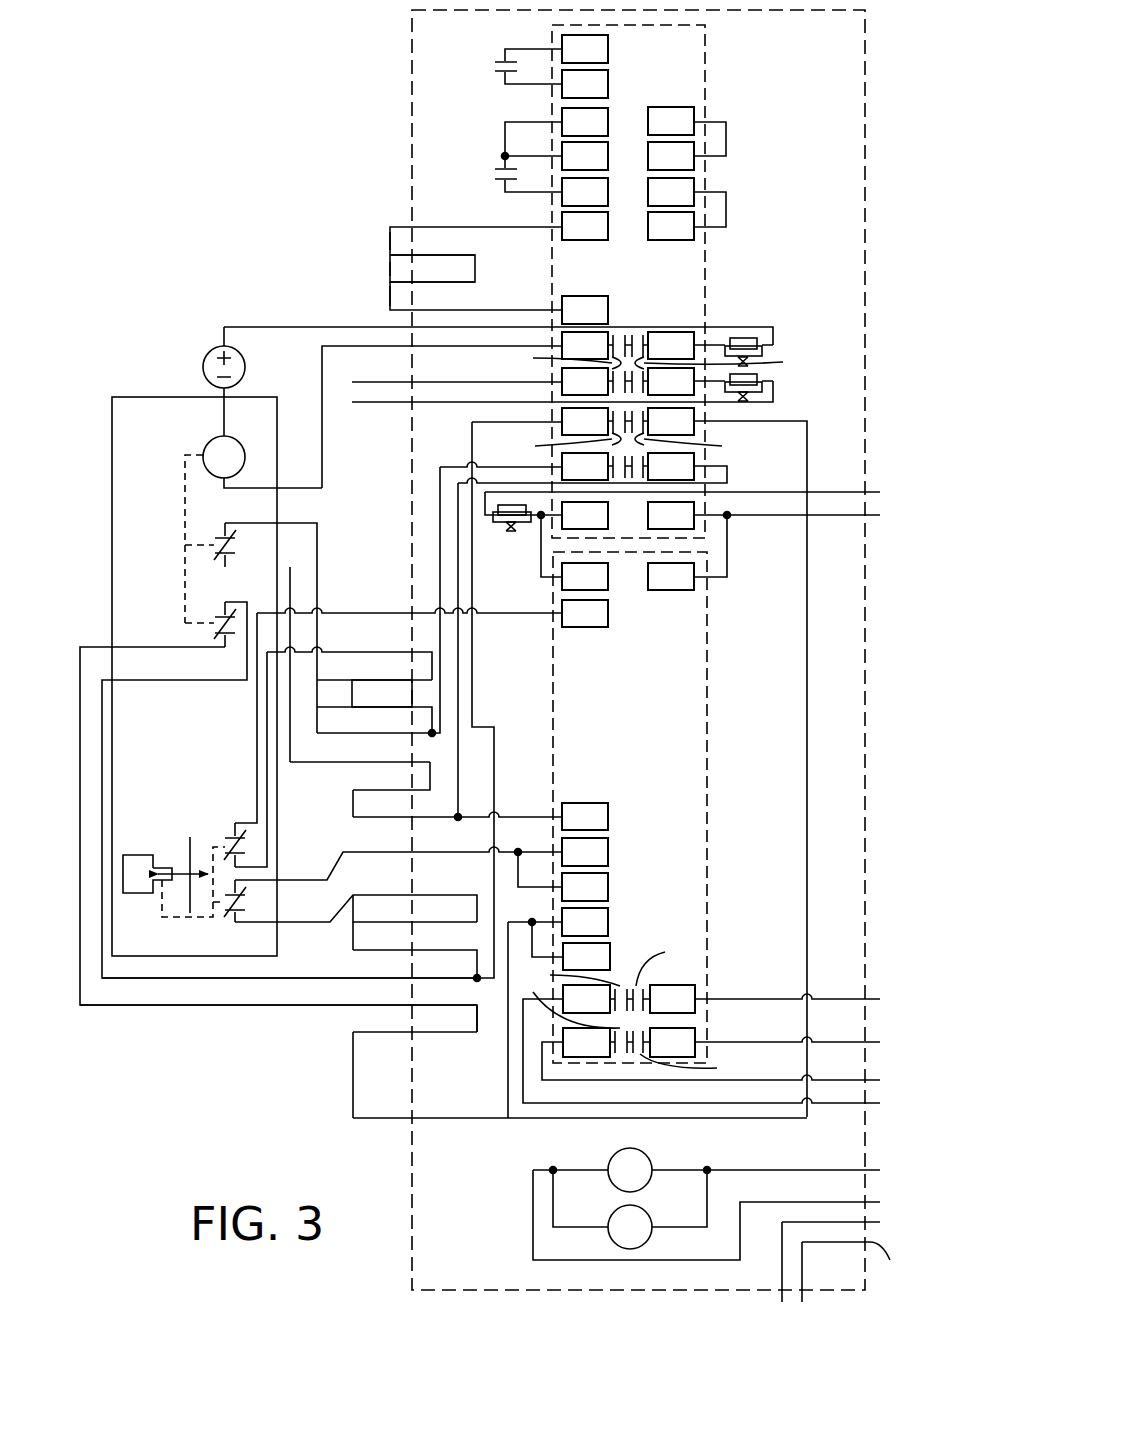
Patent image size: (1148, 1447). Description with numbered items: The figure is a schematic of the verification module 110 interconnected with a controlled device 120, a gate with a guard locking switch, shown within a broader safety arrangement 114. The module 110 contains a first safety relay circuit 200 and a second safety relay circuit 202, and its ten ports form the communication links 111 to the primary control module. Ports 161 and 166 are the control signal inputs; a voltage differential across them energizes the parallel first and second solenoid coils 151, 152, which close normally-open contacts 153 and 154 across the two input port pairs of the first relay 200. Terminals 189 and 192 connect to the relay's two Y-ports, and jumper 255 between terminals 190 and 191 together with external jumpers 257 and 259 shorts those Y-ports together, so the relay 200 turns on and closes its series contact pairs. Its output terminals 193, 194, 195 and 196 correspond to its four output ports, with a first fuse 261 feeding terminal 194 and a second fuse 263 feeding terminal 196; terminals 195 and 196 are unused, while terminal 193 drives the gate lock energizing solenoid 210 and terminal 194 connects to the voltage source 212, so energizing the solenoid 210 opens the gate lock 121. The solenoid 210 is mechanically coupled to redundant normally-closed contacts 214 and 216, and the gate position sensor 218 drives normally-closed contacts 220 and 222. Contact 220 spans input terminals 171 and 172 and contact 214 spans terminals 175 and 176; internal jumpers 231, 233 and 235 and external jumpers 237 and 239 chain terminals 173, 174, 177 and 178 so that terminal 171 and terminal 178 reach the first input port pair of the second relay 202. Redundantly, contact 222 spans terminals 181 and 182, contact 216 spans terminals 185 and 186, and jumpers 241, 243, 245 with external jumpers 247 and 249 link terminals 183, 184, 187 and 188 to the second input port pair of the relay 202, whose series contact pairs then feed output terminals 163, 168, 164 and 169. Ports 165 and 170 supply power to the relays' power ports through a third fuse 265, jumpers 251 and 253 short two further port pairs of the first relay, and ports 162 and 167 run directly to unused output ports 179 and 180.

The verification module 110 is at (800, 59).
The first safety relay circuit 200 is at (668, 77).
The second safety relay circuit 202 is at (648, 781).
The second normally-open contact 154 is at (488, 65).
The first normally-open contact 153 is at (488, 172).
The terminal 189 is at (392, 226).
The terminal 190 is at (400, 254).
The external jumper 257 is at (390, 240).
The jumper 255 is at (476, 270).
The terminal 191 is at (392, 278).
The external jumper 259 is at (390, 300).
The terminal 192 is at (399, 309).
The second output terminal 194 is at (392, 327).
The controlled device 120 is at (160, 330).
The safety circuit 114 is at (262, 305).
The voltage source 212 is at (203, 366).
The gate lock energizing solenoid 210 is at (207, 445).
The first output terminal 193 is at (342, 350).
The third output terminal 195 is at (356, 384).
The fourth output terminal 196 is at (377, 404).
The gate lock 121 is at (167, 500).
The normally-closed contact 214 is at (238, 546).
The normally-closed contact 216 is at (220, 622).
The input terminal 171 is at (350, 612).
The input terminal 172 is at (342, 652).
The input terminal 173 is at (390, 679).
The input terminal 174 is at (358, 688).
The input terminal 175 is at (390, 733).
The jumper 237 is at (352, 692).
The jumper 231 is at (432, 666).
The jumper 233 is at (432, 720).
The jumper 235 is at (430, 775).
The input terminal 176 is at (356, 763).
The input terminal 177 is at (356, 790).
The jumper 239 is at (352, 805).
The input terminal 178 is at (356, 818).
The gate position sensor 218 is at (138, 852).
The normally-closed contact 220 is at (226, 826).
The normally-closed contact 222 is at (228, 912).
The input terminal 181 is at (395, 852).
The input terminal 182 is at (405, 895).
The jumper 241 is at (470, 898).
The input terminal 183 is at (430, 922).
The jumper 247 is at (352, 936).
The input terminal 184 is at (394, 950).
The jumper 243 is at (477, 980).
The input terminal 185 is at (366, 978).
The input terminal 186 is at (386, 1005).
The input terminal 187 is at (366, 1032).
The jumper 245 is at (476, 1020).
The jumper 249 is at (353, 1070).
The input terminal 188 is at (375, 1118).
The jumper 251 is at (728, 140).
The jumper 253 is at (728, 210).
The first fuse 261 is at (762, 335).
The second fuse 263 is at (768, 392).
The communication links 111 is at (876, 455).
The port 165 is at (880, 492).
The port 170 is at (880, 515).
The third fuse 265 is at (508, 536).
The output terminal 168 is at (878, 999).
The output terminal 169 is at (880, 1042).
The output terminal 164 is at (888, 1068).
The output terminal 163 is at (890, 1092).
The first solenoid coil 151 is at (613, 1154).
The second solenoid coil 152 is at (613, 1212).
The port 166 is at (880, 1170).
The port 161 is at (880, 1202).
The port 167 is at (888, 1212).
The output port 180 is at (782, 1295).
The port 162 is at (857, 1268).
The output port 179 is at (805, 1295).